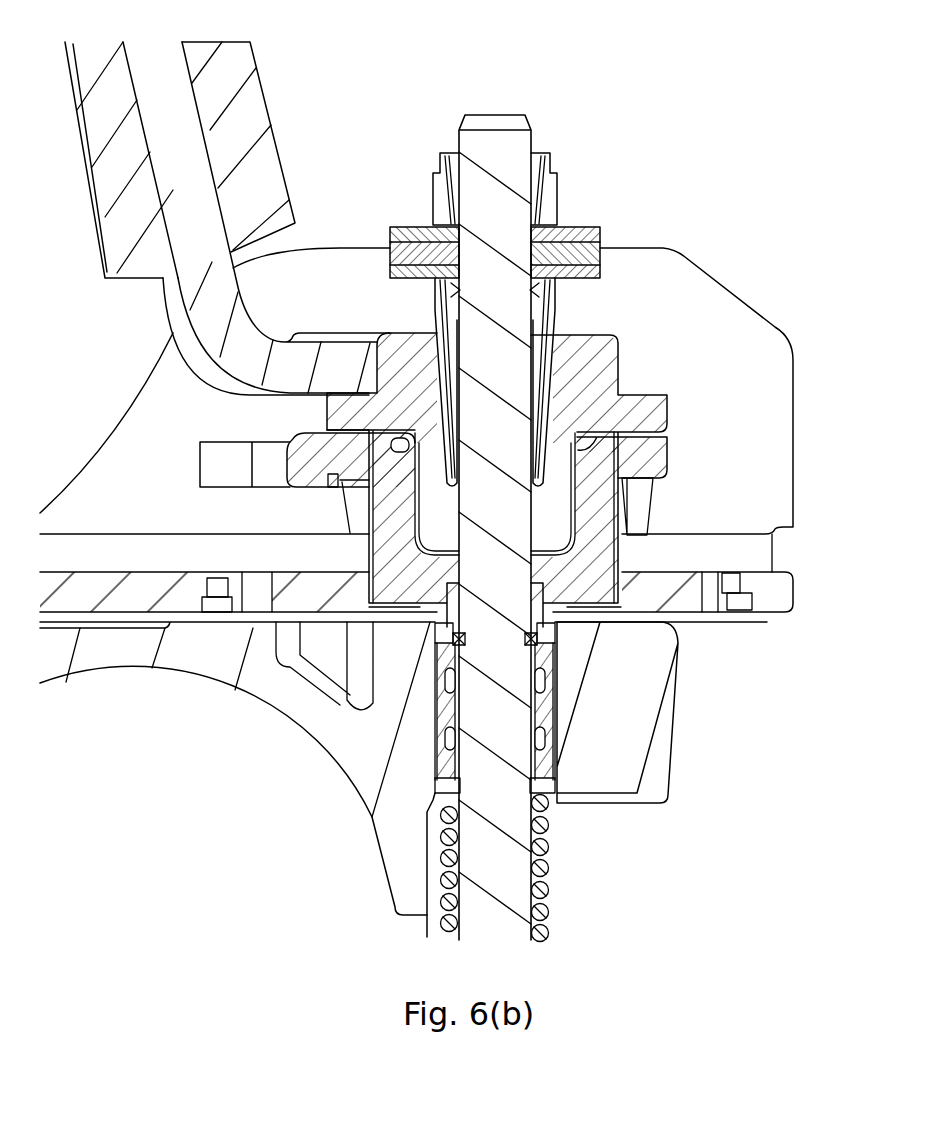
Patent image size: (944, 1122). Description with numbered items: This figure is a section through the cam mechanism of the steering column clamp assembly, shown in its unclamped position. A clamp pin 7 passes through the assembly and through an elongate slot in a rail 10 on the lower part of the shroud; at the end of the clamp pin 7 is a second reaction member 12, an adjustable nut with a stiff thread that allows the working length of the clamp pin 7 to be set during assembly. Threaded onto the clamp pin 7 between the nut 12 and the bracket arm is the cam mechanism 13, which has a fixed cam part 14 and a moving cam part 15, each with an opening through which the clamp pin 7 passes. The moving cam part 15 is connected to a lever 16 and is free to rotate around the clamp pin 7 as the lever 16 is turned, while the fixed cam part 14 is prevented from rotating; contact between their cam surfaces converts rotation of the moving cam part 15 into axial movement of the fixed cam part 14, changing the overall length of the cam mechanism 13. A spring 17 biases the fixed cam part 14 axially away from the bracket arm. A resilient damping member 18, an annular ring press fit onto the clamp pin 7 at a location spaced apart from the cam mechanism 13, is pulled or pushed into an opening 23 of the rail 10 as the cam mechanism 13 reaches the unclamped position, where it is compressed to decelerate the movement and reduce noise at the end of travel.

The clamp pin 7 is at (513, 147).
The rail 10 is at (367, 740).
The second reaction member 12 is at (543, 203).
The cam mechanism 13 is at (681, 406).
The fixed cam part 14 is at (650, 463).
The moving cam part 15 is at (583, 383).
The lever 16 is at (235, 143).
The spring 17 is at (548, 866).
The resilient damping member 18 is at (453, 645).
The opening 23 is at (543, 628).